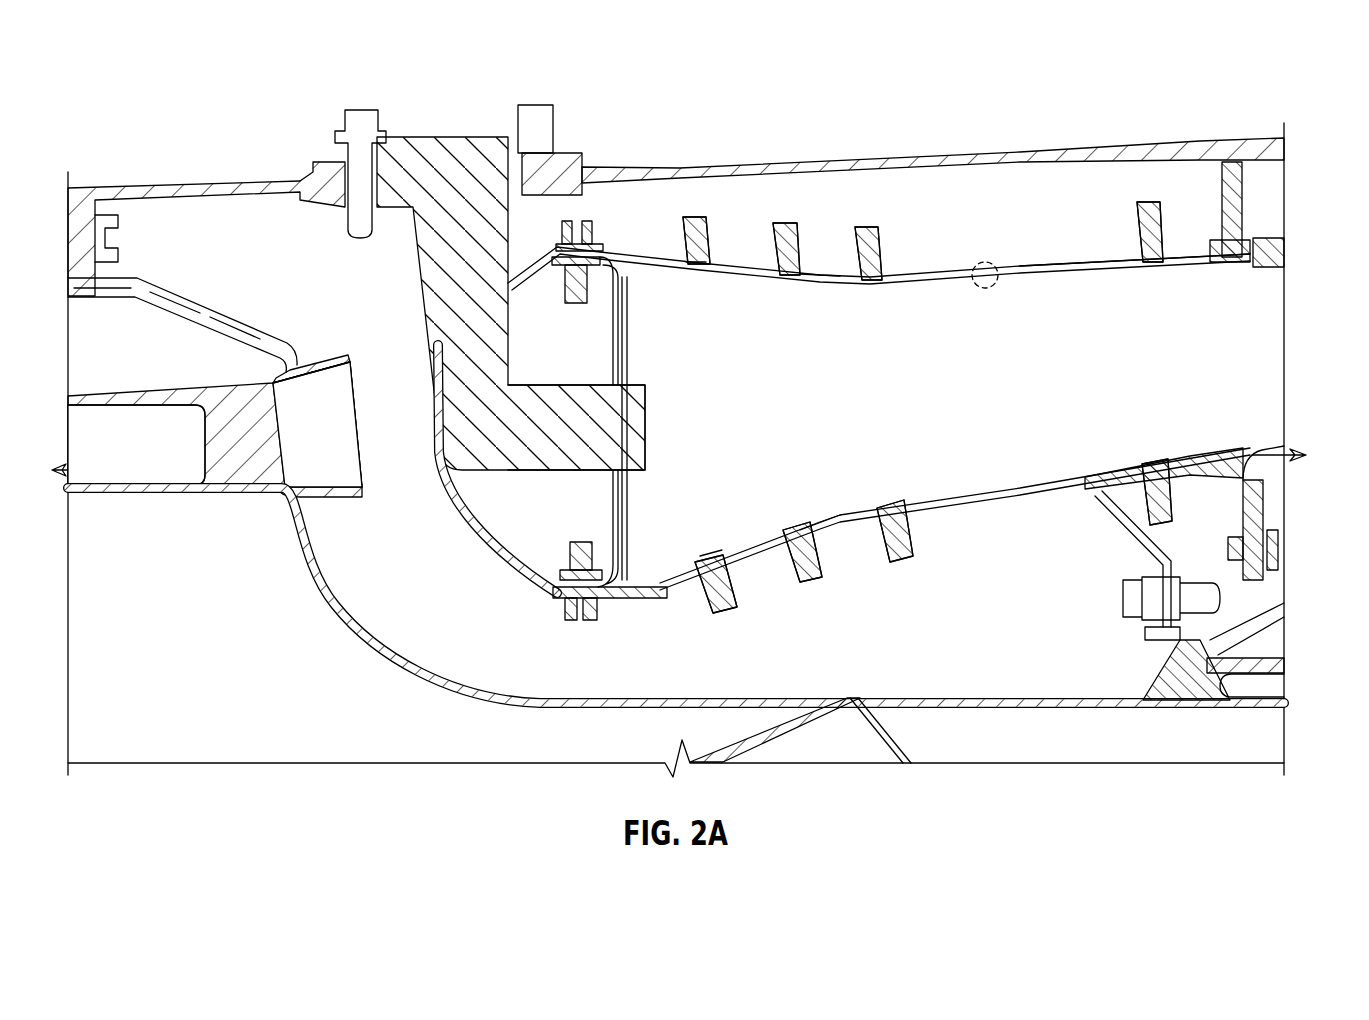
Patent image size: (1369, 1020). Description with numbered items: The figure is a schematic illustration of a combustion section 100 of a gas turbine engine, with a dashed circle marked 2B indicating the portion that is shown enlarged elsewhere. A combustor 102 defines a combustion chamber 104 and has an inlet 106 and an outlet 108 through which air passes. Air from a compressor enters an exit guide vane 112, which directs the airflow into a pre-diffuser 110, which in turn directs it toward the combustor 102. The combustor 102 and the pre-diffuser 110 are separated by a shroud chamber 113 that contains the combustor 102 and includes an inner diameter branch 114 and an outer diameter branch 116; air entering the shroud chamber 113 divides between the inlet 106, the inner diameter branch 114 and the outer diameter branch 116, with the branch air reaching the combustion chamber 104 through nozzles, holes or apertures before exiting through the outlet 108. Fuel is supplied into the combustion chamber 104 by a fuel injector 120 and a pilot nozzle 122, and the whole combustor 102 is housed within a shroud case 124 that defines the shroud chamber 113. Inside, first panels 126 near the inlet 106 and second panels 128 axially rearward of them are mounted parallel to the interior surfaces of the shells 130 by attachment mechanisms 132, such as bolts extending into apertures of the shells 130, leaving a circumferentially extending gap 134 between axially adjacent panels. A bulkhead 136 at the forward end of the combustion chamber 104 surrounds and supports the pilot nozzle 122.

The combustion section 100 is at (134, 56).
The combustor 102 is at (1046, 253).
The combustion chamber 104 is at (861, 422).
The inlet 106 is at (424, 404).
The outlet 108 is at (1262, 320).
The pre-diffuser 110 is at (234, 486).
The exit guide vane 112 is at (152, 425).
The shroud chamber 113 is at (424, 557).
The inner diameter branch 114 is at (699, 654).
The outer diameter branch 116 is at (671, 226).
The fuel injector 120 is at (460, 160).
The pilot nozzle 122 is at (648, 420).
The shroud case 124 is at (868, 150).
The first panels 126 is at (702, 278).
The second panels 128 is at (937, 285).
The shells 130 is at (742, 248).
The attachment mechanism 132 is at (788, 240).
The gap 134 is at (824, 288).
The bulkhead 136 is at (630, 348).
The enlarged portion 2B is at (996, 284).